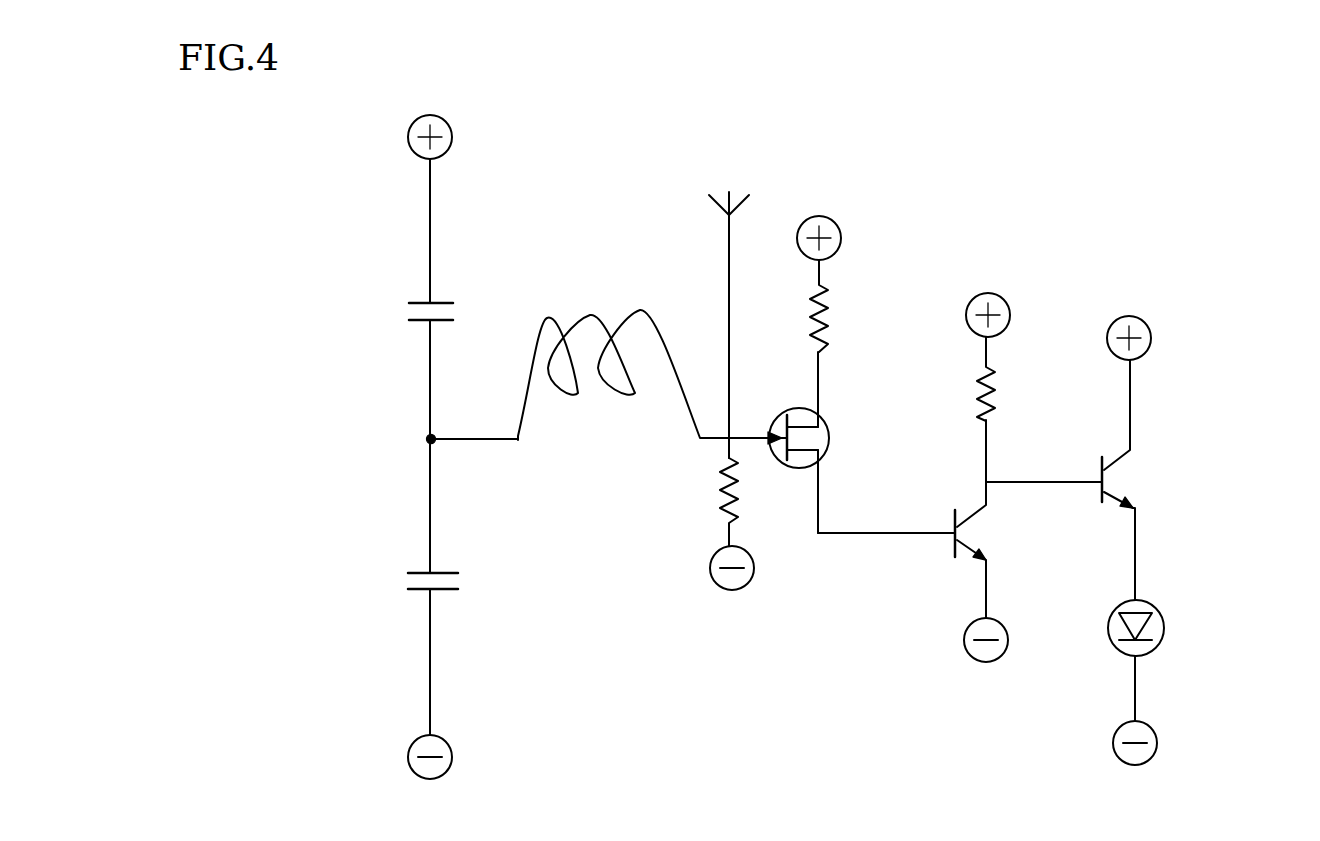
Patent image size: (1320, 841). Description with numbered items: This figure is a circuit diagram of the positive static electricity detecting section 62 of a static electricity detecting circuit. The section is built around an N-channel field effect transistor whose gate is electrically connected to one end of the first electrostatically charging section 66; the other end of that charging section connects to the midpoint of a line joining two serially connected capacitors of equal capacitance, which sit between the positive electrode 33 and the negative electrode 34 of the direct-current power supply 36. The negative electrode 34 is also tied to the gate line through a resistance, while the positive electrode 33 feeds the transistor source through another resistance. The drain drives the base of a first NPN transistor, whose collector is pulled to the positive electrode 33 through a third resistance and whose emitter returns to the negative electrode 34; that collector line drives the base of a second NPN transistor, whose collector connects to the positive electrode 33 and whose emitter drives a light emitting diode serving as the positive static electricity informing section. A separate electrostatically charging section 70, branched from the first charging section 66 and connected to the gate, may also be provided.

The positive electrode 33 is at (832, 244).
The negative electrode 34 is at (805, 662).
The direct-current power supply 36 is at (437, 118).
The positive static electricity detecting section 62 is at (1175, 461).
The first electrostatically charging section 66 is at (644, 353).
The electrostatically charging section 70 is at (729, 304).